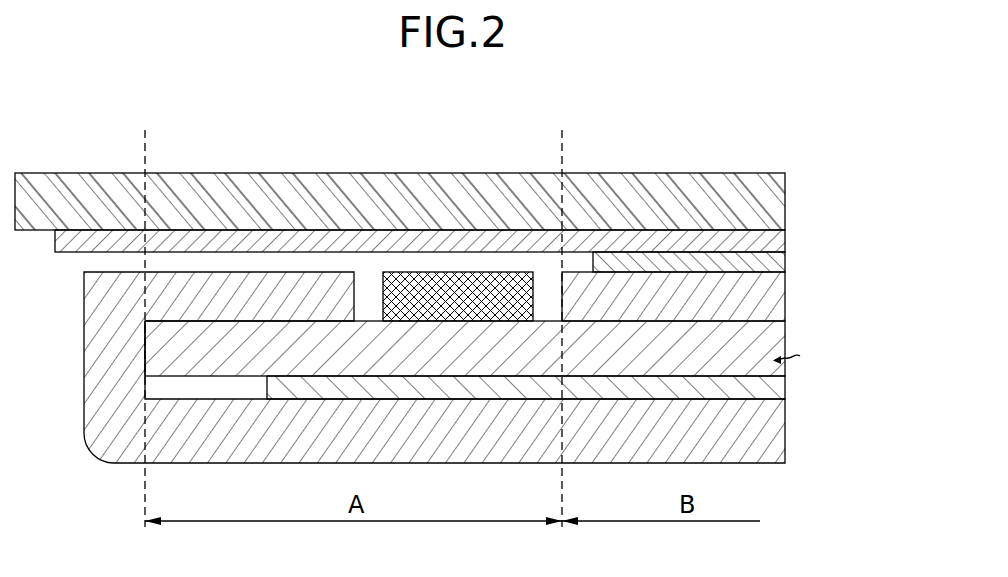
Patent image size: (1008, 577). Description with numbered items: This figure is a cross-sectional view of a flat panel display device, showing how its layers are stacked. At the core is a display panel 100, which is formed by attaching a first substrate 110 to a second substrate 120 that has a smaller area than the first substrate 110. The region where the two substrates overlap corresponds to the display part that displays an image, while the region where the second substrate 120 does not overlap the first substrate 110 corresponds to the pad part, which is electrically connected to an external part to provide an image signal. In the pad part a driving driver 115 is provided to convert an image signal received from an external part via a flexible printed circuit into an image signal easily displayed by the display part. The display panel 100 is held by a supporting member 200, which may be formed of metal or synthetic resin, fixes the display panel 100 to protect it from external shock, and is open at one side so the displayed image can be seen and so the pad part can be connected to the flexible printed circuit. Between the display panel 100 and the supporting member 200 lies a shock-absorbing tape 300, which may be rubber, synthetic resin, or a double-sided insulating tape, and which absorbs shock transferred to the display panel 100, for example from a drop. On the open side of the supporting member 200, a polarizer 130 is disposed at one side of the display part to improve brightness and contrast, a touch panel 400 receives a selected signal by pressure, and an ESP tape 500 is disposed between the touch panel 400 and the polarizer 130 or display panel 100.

The display panel 100 is at (858, 300).
The first substrate 110 is at (787, 337).
The driving driver 115 is at (457, 275).
The second substrate 120 is at (787, 296).
The polarizer 130 is at (787, 261).
The supporting member 200 is at (787, 429).
The shock-absorbing tape 300 is at (787, 387).
The touch panel 400 is at (787, 196).
The ESP tape 500 is at (787, 233).